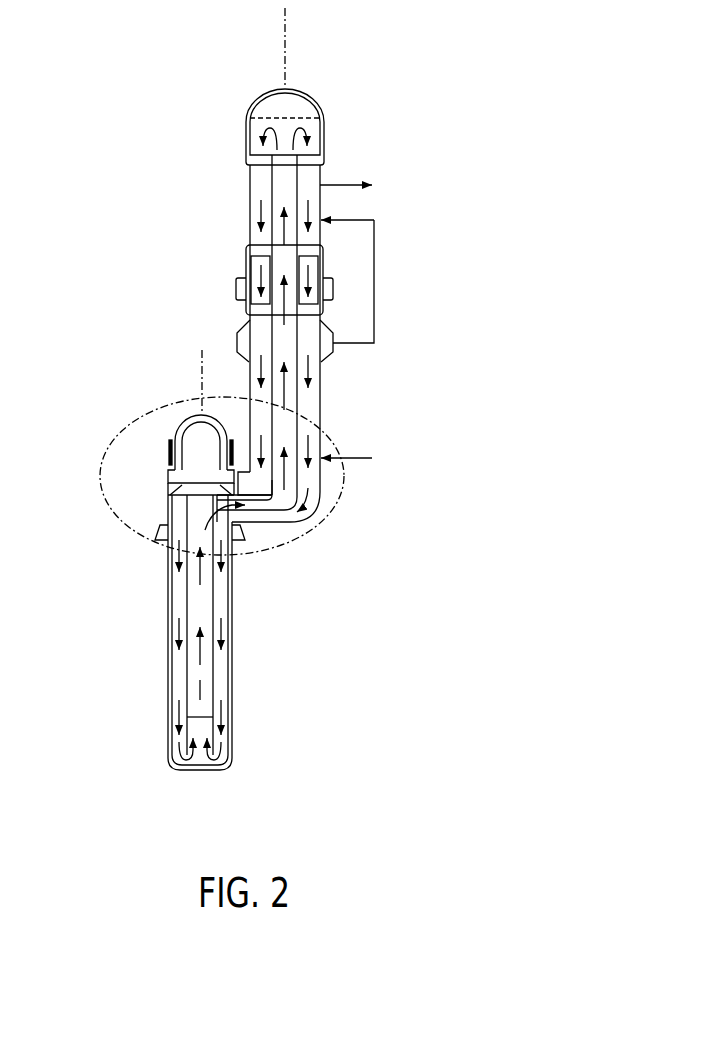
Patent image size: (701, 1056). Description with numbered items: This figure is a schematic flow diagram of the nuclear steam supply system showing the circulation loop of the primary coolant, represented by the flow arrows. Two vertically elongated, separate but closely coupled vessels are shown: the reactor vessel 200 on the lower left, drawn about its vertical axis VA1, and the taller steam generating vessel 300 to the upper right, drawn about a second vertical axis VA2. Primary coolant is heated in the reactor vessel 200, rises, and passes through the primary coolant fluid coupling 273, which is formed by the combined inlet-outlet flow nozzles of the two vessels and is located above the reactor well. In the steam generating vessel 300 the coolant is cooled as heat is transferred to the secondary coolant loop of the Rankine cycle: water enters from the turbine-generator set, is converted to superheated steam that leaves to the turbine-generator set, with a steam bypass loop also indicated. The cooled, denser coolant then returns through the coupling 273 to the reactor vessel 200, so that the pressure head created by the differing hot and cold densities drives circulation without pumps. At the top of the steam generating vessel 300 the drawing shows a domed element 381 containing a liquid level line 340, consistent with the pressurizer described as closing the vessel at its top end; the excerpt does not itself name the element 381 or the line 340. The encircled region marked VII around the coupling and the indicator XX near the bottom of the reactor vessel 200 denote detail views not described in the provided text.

The steam generating vessel 300 is at (158, 172).
The cap 381 is at (317, 97).
The water level line 340 is at (267, 117).
The primary coolant fluid coupling 273 is at (258, 536).
The reactor vessel 200 is at (145, 600).
The vertical axis VA1 is at (200, 378).
The vertical axis of superheater unit VA2 is at (288, 47).
The section detail indicator VII is at (335, 520).
The section indicator XX is at (200, 727).